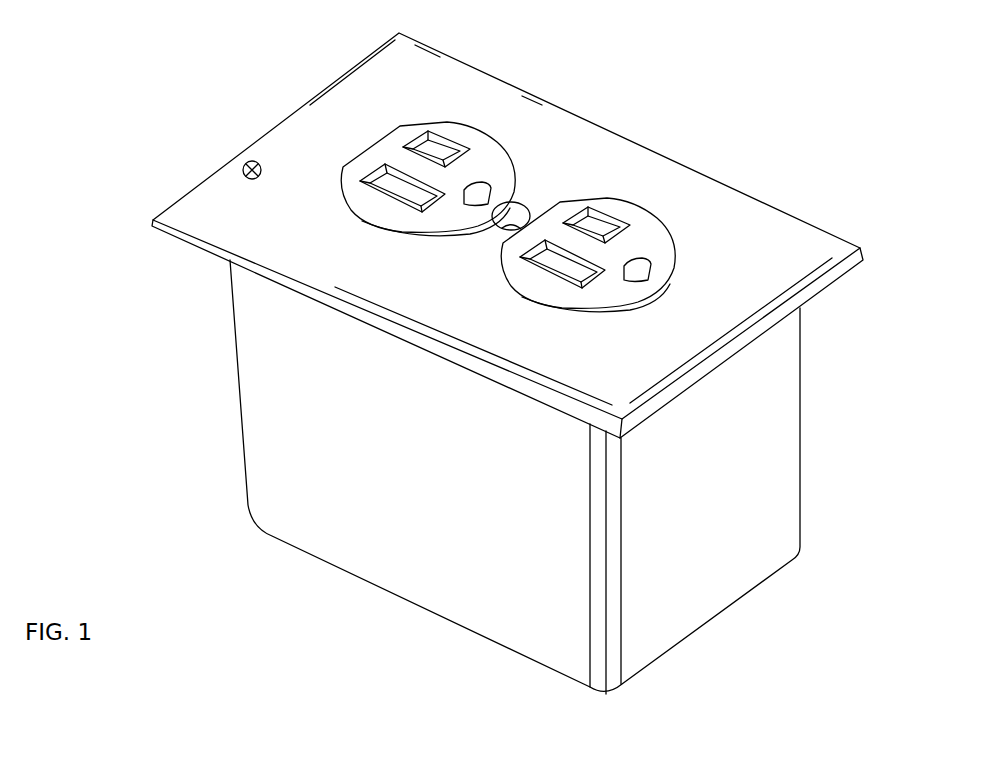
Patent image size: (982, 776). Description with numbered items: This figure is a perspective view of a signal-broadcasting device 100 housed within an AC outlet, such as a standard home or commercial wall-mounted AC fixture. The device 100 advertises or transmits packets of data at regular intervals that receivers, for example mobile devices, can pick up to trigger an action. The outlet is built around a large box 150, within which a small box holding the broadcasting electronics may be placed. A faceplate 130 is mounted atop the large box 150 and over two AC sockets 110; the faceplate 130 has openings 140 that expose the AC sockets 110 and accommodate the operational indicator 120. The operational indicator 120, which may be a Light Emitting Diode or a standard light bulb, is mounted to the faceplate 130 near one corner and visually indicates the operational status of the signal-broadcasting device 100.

The signal-broadcasting device 100 is at (63, 457).
The AC socket 110 is at (644, 201).
The operational indicator 120 is at (254, 161).
The faceplate 130 is at (258, 214).
The openings 140 is at (393, 234).
The large box 150 is at (404, 430).